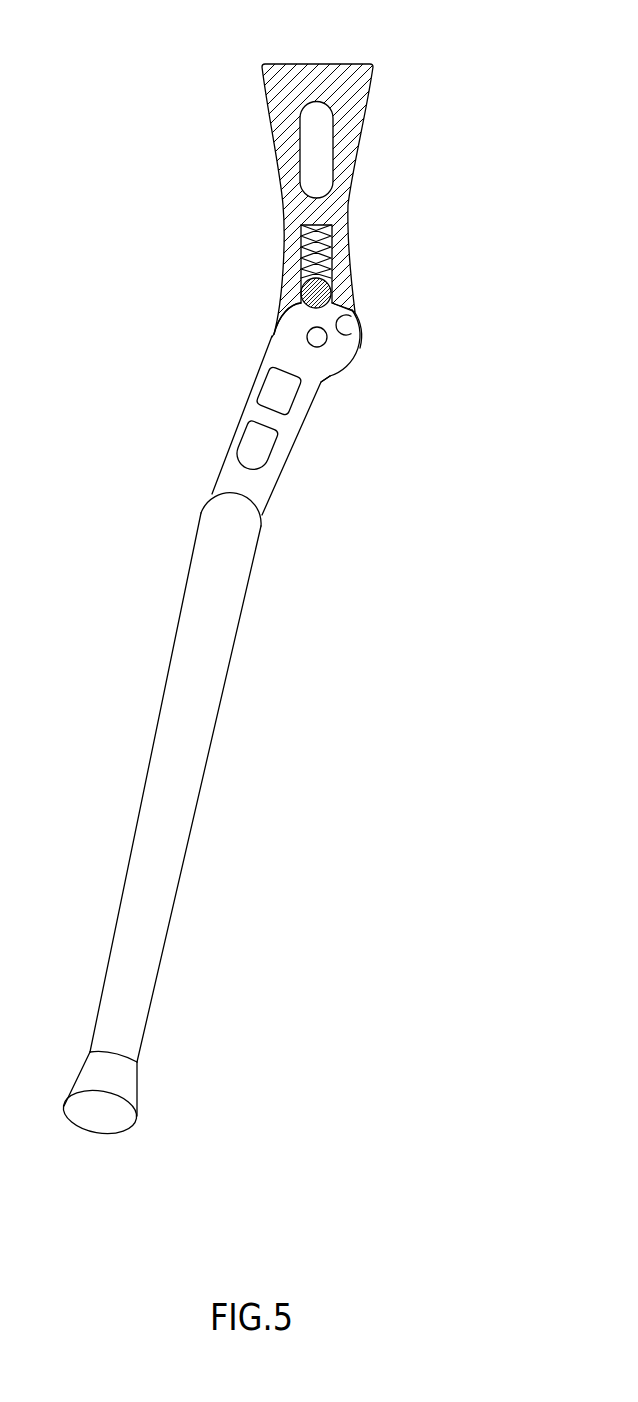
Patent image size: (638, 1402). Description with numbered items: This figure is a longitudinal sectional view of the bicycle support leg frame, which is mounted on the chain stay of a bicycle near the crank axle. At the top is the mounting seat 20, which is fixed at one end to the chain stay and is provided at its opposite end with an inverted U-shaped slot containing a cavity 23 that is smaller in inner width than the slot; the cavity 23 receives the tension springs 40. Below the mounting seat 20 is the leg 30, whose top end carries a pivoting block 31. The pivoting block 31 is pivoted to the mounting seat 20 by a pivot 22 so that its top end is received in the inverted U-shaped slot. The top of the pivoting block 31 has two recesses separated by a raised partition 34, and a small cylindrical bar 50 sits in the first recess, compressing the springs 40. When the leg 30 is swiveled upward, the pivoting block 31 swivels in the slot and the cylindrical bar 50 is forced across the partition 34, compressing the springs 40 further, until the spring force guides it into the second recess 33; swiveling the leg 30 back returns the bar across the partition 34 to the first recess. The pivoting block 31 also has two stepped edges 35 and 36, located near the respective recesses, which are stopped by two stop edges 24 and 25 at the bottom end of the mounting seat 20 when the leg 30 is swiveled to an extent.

The mounting seat 20 is at (268, 64).
The tension springs 40 is at (348, 197).
The cavity 23 is at (331, 243).
The cylindrical bar 50 is at (350, 279).
The partition 34 is at (330, 312).
The pivoting block 31 is at (233, 423).
The stop edge 25 is at (358, 336).
The second recess 33 is at (346, 327).
The pivot 22 is at (319, 339).
The stepped edge 36 is at (330, 378).
The stop edge 24 is at (272, 333).
The stepped edge 35 is at (271, 334).
The leg 30 is at (234, 657).